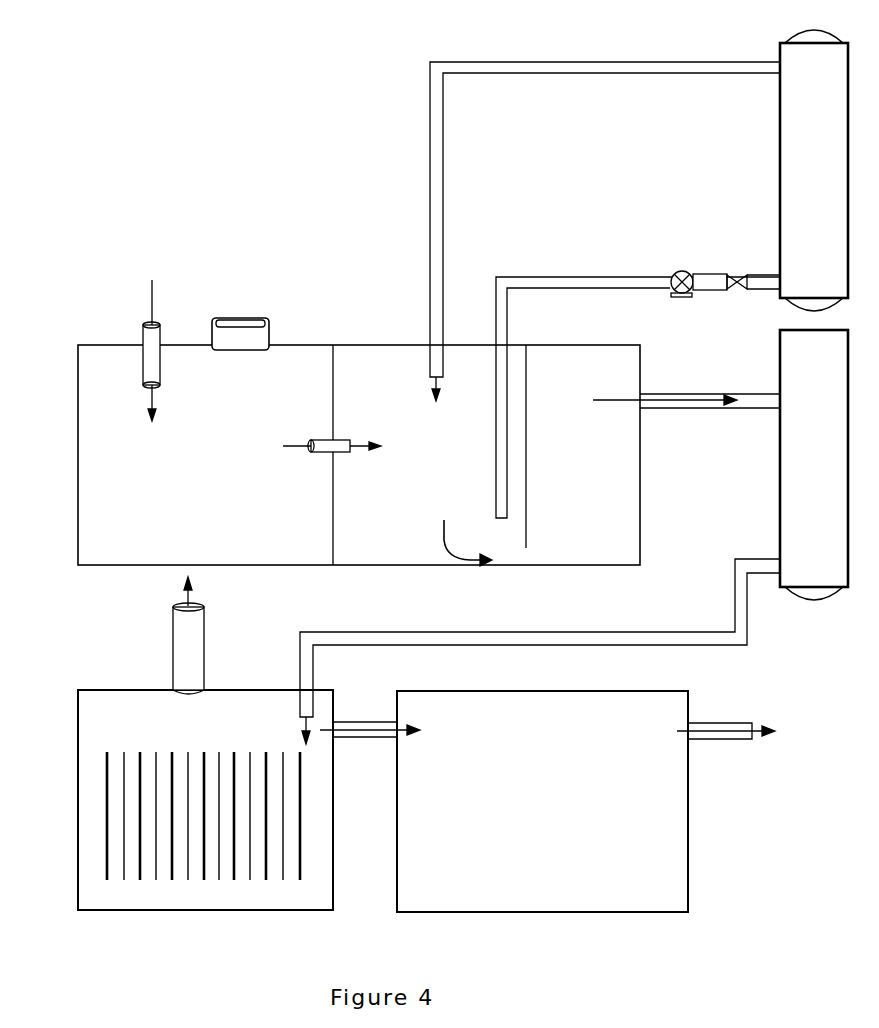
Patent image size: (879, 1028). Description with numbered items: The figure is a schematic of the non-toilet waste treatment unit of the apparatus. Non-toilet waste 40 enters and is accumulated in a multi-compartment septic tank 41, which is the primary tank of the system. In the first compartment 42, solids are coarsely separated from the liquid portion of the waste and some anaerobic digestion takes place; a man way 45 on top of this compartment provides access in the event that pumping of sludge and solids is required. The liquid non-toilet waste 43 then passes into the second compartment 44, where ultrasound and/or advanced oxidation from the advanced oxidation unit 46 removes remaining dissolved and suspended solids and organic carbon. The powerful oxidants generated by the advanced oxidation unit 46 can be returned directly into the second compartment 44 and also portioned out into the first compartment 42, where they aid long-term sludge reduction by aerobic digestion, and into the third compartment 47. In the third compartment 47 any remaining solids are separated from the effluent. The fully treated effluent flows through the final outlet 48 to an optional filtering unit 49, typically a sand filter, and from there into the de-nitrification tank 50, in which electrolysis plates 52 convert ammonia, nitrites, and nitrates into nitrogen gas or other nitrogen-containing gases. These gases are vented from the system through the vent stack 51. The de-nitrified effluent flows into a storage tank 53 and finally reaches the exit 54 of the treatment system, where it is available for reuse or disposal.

The non-toilet waste 40 is at (168, 346).
The septic tank 41 is at (72, 398).
The first compartment 42 is at (210, 455).
The liquid non-toilet waste 43 is at (333, 460).
The second compartment 44 is at (432, 455).
The man way 45 is at (258, 327).
The advanced oxidation unit 46 is at (639, 215).
The third compartment 47 is at (638, 397).
The final outlet 48 is at (686, 417).
The filtering unit 49 is at (574, 523).
The de-nitrification tank 50 is at (184, 800).
The vent stack 51 is at (168, 635).
The electrolysis plates 52 is at (200, 804).
The storage tank 53 is at (504, 801).
The exit 54 is at (726, 749).